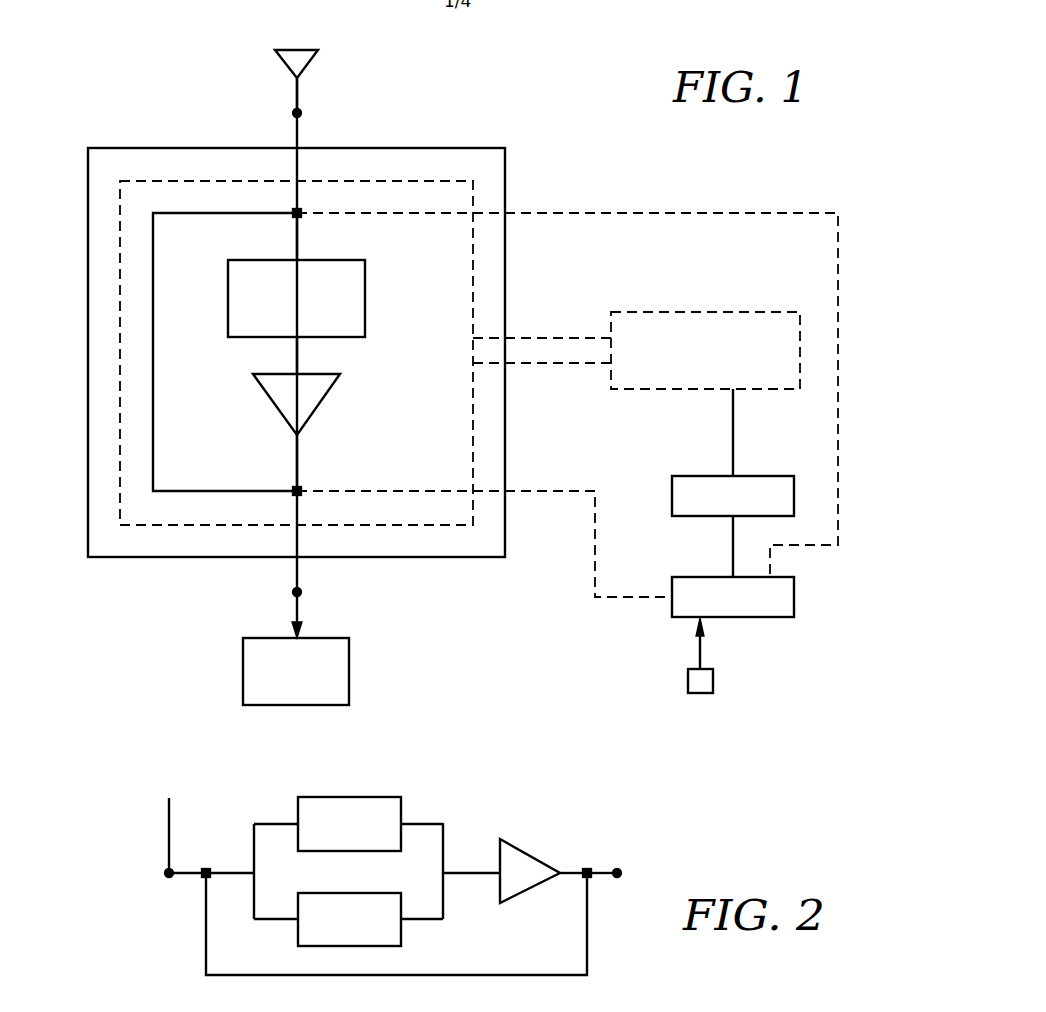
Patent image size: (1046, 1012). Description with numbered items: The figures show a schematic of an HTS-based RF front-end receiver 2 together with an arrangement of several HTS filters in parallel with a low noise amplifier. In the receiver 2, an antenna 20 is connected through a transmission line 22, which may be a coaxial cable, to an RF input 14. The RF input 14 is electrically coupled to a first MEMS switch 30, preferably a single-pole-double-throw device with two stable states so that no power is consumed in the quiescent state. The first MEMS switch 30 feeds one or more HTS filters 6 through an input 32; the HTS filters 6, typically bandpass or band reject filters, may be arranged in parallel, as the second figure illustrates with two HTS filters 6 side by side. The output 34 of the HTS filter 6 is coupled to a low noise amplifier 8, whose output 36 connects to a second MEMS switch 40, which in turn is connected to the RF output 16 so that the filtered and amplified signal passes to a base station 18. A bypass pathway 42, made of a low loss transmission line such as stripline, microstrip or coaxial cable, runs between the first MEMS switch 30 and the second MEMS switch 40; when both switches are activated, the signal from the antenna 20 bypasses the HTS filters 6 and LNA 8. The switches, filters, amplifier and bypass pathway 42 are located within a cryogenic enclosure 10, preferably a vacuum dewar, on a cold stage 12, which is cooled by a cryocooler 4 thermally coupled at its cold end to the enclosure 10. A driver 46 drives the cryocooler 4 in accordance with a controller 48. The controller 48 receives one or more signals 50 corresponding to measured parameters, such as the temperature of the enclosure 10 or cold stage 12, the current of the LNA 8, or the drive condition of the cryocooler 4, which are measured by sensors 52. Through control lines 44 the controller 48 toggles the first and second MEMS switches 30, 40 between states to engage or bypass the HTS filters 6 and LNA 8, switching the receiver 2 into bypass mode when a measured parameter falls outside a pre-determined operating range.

In FIG. 1, the HTS-based RF front-end receiver 2 is at (488, 106).
In FIG. 1, the cryocooler 4 is at (712, 310).
In FIG. 1, the HTS filter 6 is at (366, 297).
In FIG. 2, the HTS filter 6 is at (372, 796).
In FIG. 1, the low noise amplifier 8 is at (325, 398).
In FIG. 2, the low noise amplifier 8 is at (527, 850).
In FIG. 1, the cryogenic enclosure 10 is at (457, 557).
In FIG. 1, the cold stage 12 is at (163, 527).
In FIG. 1, the RF input 14 is at (292, 113).
In FIG. 2, the RF input 14 is at (167, 878).
In FIG. 1, the RF output 16 is at (292, 592).
In FIG. 2, the RF output 16 is at (620, 862).
In FIG. 1, the base station 18 is at (350, 670).
In FIG. 1, the antenna 20 is at (290, 45).
In FIG. 1, the transmission line 22 is at (300, 93).
In FIG. 1, the first MEMS switch 30 is at (294, 210).
In FIG. 2, the first MEMS switch 30 is at (205, 866).
In FIG. 1, the input 32 is at (300, 250).
In FIG. 2, the input 32 is at (232, 876).
In FIG. 1, the output 34 is at (300, 357).
In FIG. 2, the output 34 is at (475, 877).
In FIG. 1, the output 36 is at (300, 453).
In FIG. 2, the output 36 is at (568, 877).
In FIG. 1, the second MEMS switch 40 is at (293, 488).
In FIG. 2, the second MEMS switch 40 is at (587, 867).
In FIG. 1, the bypass pathway 42 is at (154, 403).
In FIG. 2, the bypass pathway 42 is at (545, 976).
In FIG. 1, the control lines 44 is at (643, 210).
In FIG. 1, the driver 46 is at (697, 476).
In FIG. 1, the controller 48 is at (703, 577).
In FIG. 1, the signals 50 is at (700, 652).
In FIG. 1, the sensors 52 is at (703, 693).